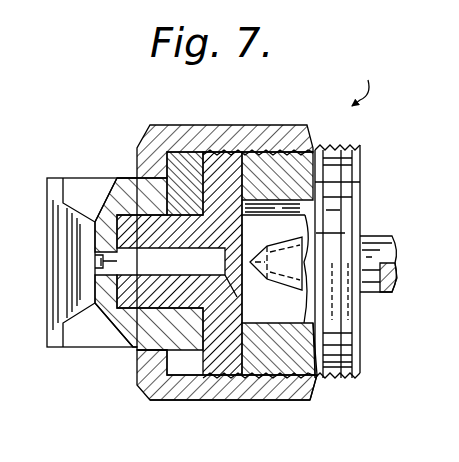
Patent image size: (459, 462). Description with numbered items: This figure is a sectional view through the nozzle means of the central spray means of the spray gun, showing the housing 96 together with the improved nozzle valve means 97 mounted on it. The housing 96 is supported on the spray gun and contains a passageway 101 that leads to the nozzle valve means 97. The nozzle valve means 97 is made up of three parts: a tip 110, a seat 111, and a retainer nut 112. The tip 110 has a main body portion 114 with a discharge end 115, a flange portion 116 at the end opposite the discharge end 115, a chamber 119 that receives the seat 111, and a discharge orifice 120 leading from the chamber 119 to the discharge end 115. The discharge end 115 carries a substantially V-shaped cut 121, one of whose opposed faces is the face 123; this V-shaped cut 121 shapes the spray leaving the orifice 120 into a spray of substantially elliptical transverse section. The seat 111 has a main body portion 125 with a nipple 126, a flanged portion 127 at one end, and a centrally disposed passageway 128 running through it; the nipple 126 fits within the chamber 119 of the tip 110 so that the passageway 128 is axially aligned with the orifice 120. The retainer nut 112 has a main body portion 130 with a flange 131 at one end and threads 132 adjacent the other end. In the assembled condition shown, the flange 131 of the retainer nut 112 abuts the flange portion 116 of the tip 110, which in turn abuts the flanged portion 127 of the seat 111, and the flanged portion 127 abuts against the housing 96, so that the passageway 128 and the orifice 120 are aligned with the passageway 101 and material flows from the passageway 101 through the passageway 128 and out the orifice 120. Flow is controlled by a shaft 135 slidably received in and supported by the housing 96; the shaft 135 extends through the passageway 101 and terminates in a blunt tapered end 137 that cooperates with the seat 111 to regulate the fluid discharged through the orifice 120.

The nozzle valve means 97 is at (228, 115).
The housing 96 is at (377, 127).
The passageway 101 is at (287, 190).
The tip 110 is at (62, 350).
The seat 111 is at (223, 378).
The retainer nut 112 is at (272, 405).
The main body portion 114 is at (110, 162).
The discharge end 115 is at (46, 288).
The flange portion 116 is at (183, 156).
The chamber 119 is at (183, 310).
The discharge orifice 120 is at (95, 261).
The V-shaped cut 121 is at (43, 230).
The opposed face 123 is at (70, 290).
The main body portion 125 is at (233, 311).
The nipple 126 is at (173, 212).
The flanged portion 127 is at (236, 148).
The passageway 128 is at (199, 237).
The main body portion 130 is at (197, 397).
The flange 131 is at (137, 371).
The threads 132 is at (310, 393).
The shaft 135 is at (384, 237).
The blunt tapered end 137 is at (258, 258).